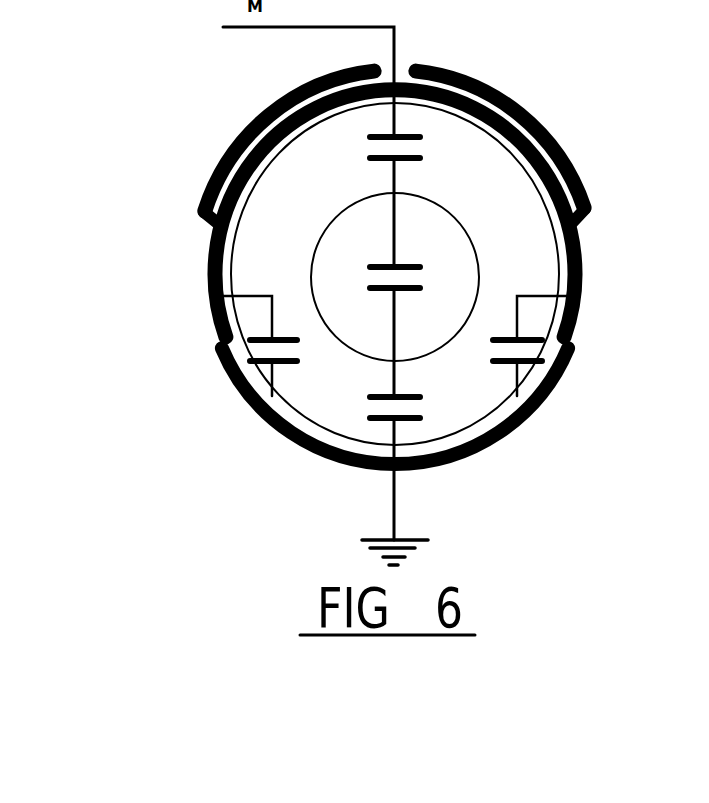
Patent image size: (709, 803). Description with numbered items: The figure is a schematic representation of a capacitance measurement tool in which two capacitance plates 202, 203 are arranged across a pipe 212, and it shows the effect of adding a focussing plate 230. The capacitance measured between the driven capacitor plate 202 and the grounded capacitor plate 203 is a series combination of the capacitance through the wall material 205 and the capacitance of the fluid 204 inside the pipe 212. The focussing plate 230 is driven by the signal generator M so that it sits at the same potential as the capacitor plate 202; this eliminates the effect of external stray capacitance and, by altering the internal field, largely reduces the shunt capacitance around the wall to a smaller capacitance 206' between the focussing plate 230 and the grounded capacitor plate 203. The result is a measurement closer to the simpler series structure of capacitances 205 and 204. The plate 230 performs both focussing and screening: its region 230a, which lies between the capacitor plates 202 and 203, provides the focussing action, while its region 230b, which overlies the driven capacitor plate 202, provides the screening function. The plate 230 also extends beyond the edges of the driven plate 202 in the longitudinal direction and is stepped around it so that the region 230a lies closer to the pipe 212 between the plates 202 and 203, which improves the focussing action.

The capacitor plate 202 is at (520, 128).
The capacitor plate 203 is at (287, 433).
The capacitance of the fluid 204 is at (377, 278).
The capacitance through the wall material 205 is at (373, 148).
The capacitance 206' is at (332, 381).
The pipe 212 is at (530, 260).
The focussing plate 230 is at (588, 183).
The region of the plate 230a is at (583, 287).
The region of the plate 230b is at (493, 88).